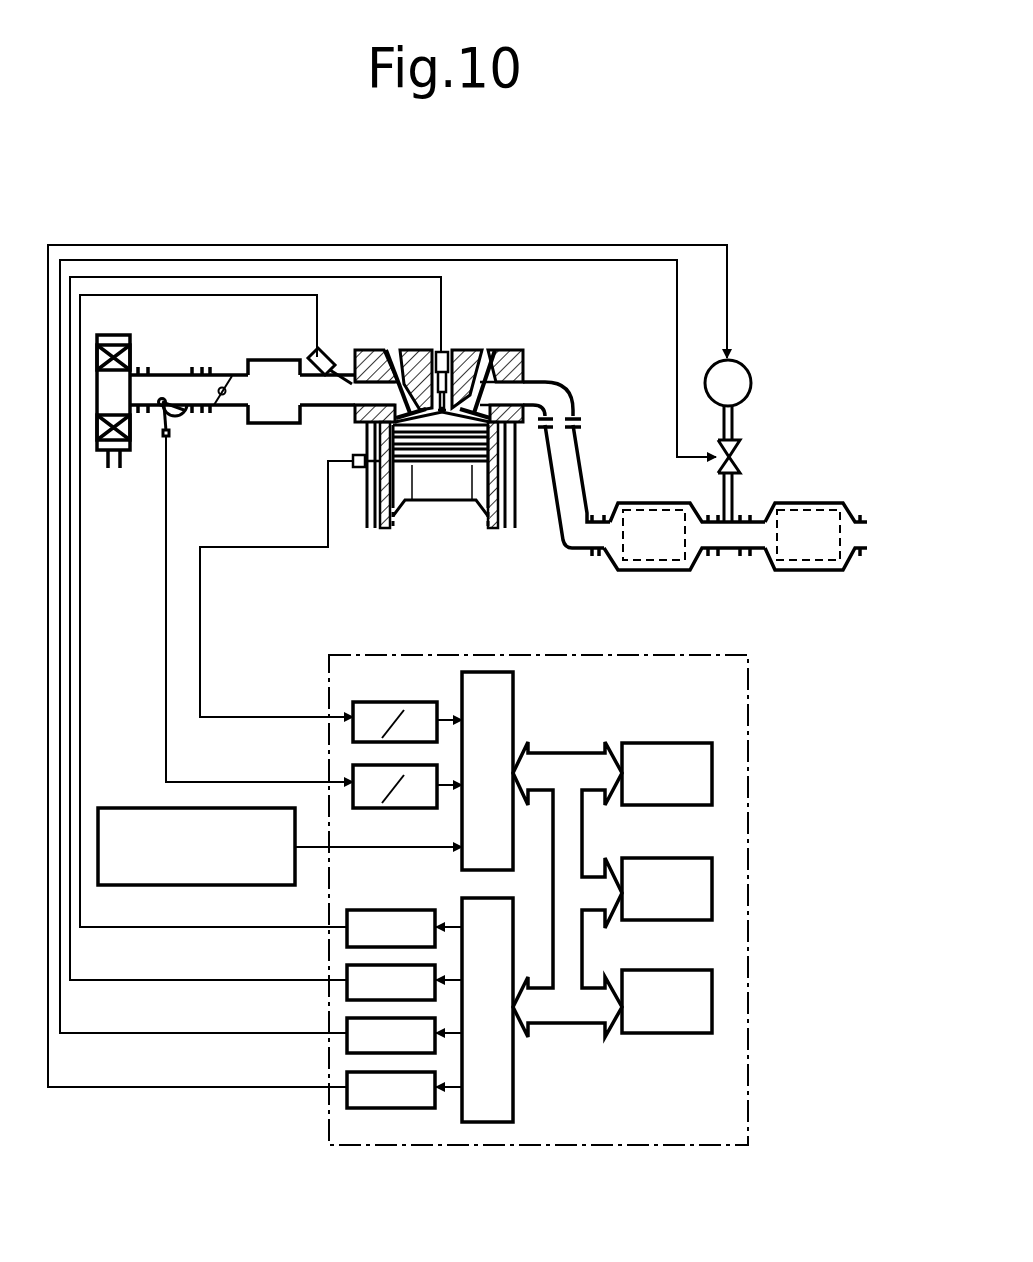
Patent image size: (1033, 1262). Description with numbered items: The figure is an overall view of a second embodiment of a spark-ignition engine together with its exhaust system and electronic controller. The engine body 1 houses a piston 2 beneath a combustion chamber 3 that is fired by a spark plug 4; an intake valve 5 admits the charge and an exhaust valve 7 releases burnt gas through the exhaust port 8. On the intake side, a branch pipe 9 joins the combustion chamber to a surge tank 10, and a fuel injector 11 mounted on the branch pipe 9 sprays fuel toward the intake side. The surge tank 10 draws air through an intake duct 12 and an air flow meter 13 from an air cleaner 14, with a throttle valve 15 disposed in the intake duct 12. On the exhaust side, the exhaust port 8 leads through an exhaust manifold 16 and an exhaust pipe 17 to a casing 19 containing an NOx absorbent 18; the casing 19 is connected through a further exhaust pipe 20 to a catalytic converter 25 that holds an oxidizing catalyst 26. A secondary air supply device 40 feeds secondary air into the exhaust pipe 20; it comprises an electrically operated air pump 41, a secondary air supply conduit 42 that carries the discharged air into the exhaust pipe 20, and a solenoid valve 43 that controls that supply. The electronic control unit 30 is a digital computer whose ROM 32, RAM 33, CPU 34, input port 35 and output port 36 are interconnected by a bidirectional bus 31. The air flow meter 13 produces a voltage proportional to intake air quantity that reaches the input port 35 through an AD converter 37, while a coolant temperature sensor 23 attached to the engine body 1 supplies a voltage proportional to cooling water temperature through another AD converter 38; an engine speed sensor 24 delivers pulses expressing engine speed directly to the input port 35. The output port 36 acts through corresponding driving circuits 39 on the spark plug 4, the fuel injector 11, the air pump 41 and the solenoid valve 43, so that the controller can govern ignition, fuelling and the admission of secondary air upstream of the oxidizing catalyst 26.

The engine body 1 is at (524, 512).
The piston 2 is at (452, 502).
The combustion chamber 3 is at (410, 502).
The spark plug 4 is at (447, 352).
The intake valve 5 is at (388, 350).
The exhaust valve 7 is at (480, 352).
The exhaust port 8 is at (510, 352).
The branch pipe 9 is at (321, 406).
The surge tank 10 is at (262, 424).
The fuel injector 11 is at (322, 356).
The intake duct 12 is at (198, 372).
The air flow meter 13 is at (162, 372).
The air cleaner 14 is at (112, 335).
The throttle valve 15 is at (225, 385).
The exhaust manifold 16 is at (372, 350).
The exhaust pipe 17 is at (576, 452).
The NOx absorbent 18 is at (650, 502).
The casing 19 is at (651, 571).
The exhaust pipe 20 is at (728, 557).
The coolant temperature sensor 23 is at (358, 470).
The engine speed sensor 24 is at (122, 807).
The catalytic converter 25 is at (819, 571).
The oxidizing catalyst 26 is at (822, 503).
The electronic control unit 30 is at (758, 745).
The bidirectional bus 31 is at (574, 752).
The ROM 32 is at (696, 743).
The RAM 33 is at (696, 858).
The CPU 34 is at (696, 970).
The input port 35 is at (514, 682).
The output port 36 is at (514, 1106).
The AD converter 37 is at (353, 765).
The AD converter 38 is at (353, 702).
The driving circuits 39 is at (347, 918).
The secondary air supply device 40 is at (750, 426).
The air pump 41 is at (750, 372).
The secondary air supply conduit 42 is at (734, 490).
The solenoid valve 43 is at (743, 452).